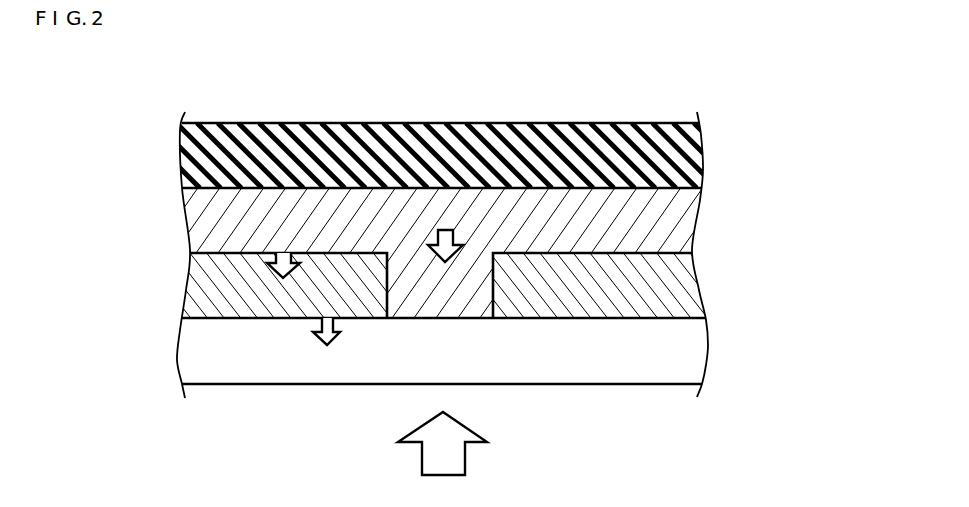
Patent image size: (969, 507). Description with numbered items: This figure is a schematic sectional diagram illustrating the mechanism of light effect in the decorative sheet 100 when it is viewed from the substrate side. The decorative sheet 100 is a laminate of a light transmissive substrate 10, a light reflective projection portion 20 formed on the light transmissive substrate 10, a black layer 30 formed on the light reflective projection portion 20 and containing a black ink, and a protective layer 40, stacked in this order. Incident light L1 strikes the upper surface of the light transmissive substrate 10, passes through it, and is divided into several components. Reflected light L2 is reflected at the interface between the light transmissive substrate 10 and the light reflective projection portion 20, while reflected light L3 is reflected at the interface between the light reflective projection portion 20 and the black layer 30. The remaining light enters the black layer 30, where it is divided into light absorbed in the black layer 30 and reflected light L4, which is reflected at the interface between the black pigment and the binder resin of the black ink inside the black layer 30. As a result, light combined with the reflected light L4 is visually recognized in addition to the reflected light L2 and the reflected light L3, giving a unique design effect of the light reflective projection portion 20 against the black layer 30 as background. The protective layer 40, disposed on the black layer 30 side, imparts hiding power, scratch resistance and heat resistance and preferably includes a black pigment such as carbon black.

The decorative sheet 100 is at (473, 271).
The light transmissive substrate 10 is at (678, 345).
The light reflective projection portion 20 is at (678, 285).
The black layer 30 is at (678, 223).
The protective layer 40 is at (678, 158).
The incident light L1 is at (455, 448).
The reflected light L2 is at (325, 343).
The reflected light L3 is at (283, 278).
The reflected light L4 is at (442, 240).